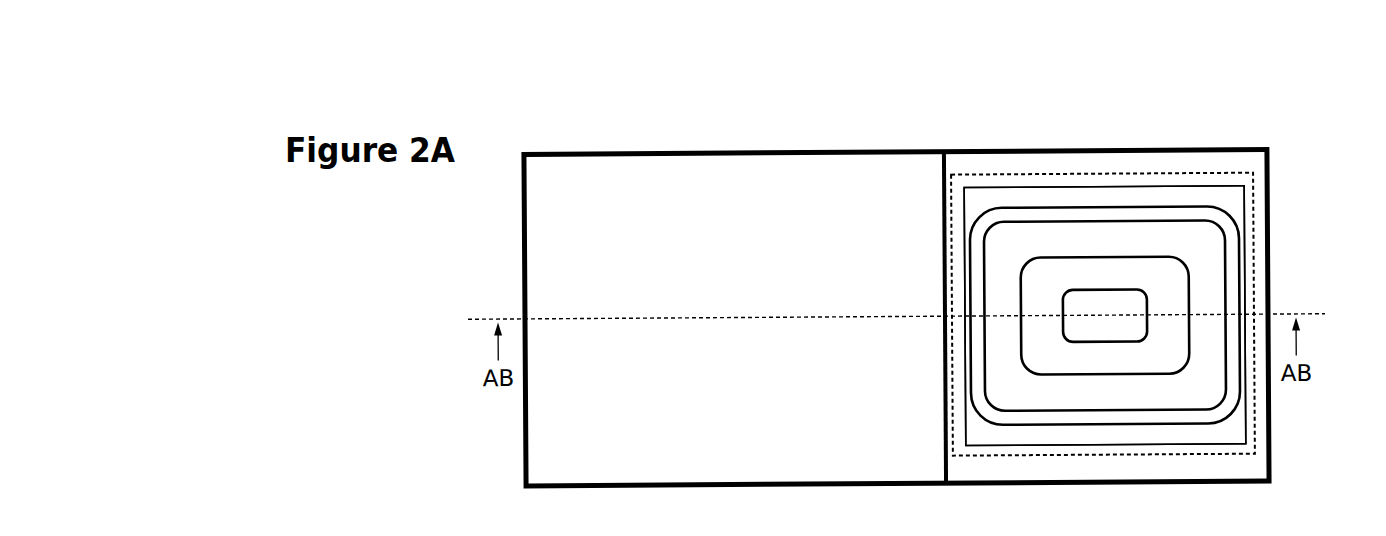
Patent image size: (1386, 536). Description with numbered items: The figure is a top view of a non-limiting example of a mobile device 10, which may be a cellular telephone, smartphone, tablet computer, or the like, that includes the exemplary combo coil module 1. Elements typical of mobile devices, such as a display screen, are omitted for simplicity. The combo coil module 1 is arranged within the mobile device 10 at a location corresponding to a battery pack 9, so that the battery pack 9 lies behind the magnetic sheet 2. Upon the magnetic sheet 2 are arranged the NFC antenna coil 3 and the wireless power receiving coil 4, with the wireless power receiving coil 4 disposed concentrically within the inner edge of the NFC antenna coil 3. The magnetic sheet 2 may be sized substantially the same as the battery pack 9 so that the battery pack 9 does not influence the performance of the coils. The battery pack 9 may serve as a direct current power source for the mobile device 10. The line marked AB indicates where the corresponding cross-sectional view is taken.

The mobile device 10 is at (800, 128).
The battery pack 9 is at (1257, 235).
The combo coil module 1 is at (1211, 187).
The magnetic sheet 2 is at (1185, 446).
The NFC antenna coil 3 is at (1027, 421).
The wireless power receiving coil 4 is at (1140, 358).